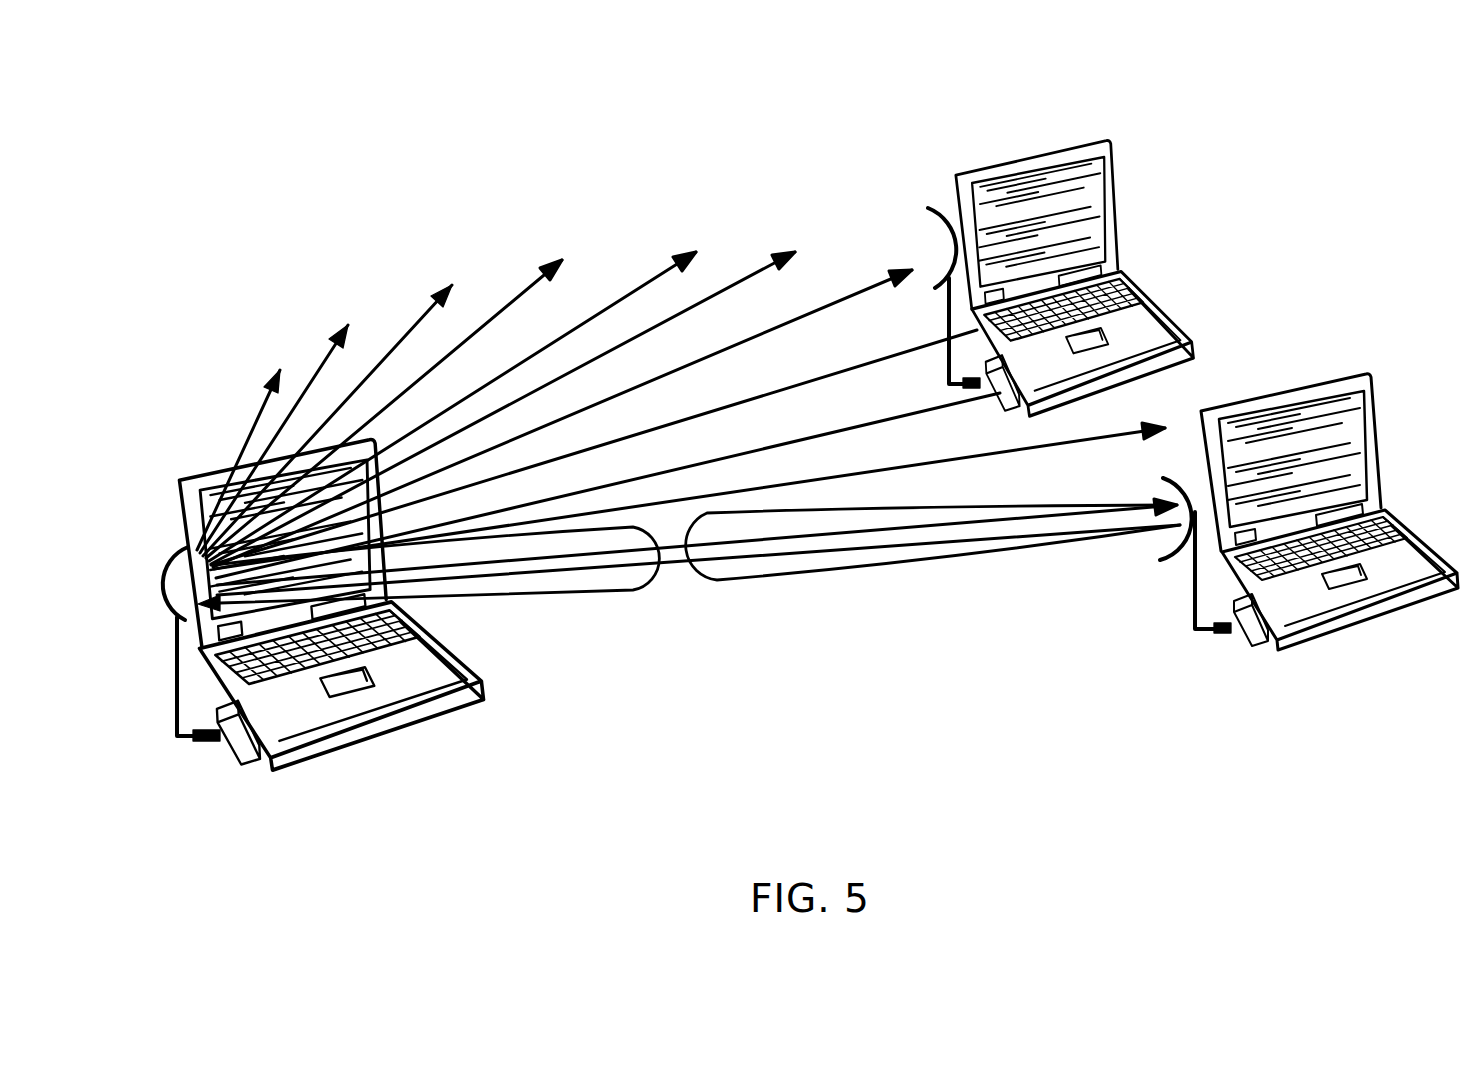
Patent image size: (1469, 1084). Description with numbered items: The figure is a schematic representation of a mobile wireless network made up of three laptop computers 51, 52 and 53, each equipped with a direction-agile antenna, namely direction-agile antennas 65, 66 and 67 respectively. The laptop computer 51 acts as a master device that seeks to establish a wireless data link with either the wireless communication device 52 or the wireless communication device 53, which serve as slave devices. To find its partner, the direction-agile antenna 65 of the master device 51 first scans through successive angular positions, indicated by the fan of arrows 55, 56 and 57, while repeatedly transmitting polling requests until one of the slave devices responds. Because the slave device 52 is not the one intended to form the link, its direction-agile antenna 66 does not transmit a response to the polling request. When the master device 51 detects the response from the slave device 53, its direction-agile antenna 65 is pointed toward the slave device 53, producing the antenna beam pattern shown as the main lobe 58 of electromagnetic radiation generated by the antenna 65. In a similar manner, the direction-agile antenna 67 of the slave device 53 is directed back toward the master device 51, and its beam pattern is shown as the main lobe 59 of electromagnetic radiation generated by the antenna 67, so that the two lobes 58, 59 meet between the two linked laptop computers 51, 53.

The laptop computer 51 is at (333, 757).
The laptop computer 52 is at (1196, 330).
The laptop computer 53 is at (1297, 642).
The arrow 55 is at (250, 422).
The arrow 56 is at (320, 358).
The arrow 57 is at (407, 327).
The main lobe 58 is at (535, 598).
The main lobe 59 is at (740, 582).
The direction-agile antenna 65 is at (160, 582).
The direction-agile antenna 66 is at (930, 205).
The direction-agile antenna 67 is at (1180, 545).